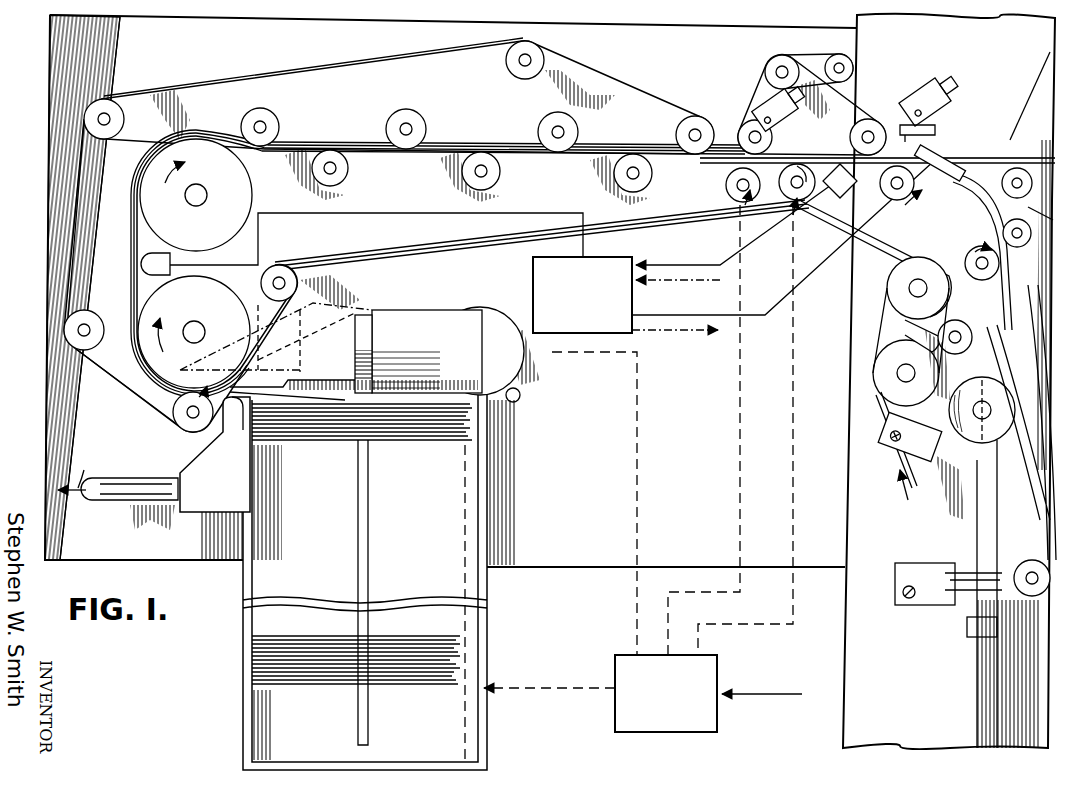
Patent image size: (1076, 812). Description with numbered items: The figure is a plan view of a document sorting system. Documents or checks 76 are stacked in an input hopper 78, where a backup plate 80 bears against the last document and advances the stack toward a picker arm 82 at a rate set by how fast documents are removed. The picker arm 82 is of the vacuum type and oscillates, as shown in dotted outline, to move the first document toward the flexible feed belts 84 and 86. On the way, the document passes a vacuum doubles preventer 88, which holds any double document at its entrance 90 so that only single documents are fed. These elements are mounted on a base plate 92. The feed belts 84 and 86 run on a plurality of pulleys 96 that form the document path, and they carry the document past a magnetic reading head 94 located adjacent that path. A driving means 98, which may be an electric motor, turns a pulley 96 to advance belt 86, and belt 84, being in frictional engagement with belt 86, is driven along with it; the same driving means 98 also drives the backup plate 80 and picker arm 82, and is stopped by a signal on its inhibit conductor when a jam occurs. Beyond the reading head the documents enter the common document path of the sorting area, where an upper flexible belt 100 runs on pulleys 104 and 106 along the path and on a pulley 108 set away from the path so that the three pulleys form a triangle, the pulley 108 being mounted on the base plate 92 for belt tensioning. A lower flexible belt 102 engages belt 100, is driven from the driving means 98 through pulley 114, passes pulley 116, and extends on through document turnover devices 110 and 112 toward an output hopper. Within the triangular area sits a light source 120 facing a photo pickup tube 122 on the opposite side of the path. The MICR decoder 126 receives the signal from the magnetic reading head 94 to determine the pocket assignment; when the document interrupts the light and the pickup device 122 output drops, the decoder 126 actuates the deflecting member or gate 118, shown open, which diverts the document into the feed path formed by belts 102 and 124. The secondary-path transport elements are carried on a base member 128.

The documents or checks 76 is at (133, 278).
The input hopper 78 is at (265, 578).
The backup plate 80 is at (372, 690).
The picker arm 82 is at (400, 324).
The feed belt 84 is at (345, 67).
The feed belt 86 is at (380, 155).
The vacuum doubles preventer 88 is at (205, 455).
The entrance 90 is at (240, 410).
The base plate 92 is at (57, 60).
The magnetic reading head 94 is at (150, 262).
The pulleys 96 is at (104, 139).
The driving means 98 is at (662, 732).
The upper flexible belt 100 is at (852, 100).
The lower flexible belt 102 is at (843, 230).
The pulley 104 is at (745, 128).
The pulley 106 is at (852, 134).
The pulley 108 is at (782, 56).
The document turnover device 110 is at (988, 370).
The document turnover device 112 is at (1030, 455).
The pulley 114 is at (802, 205).
The pulley 116 is at (895, 200).
The deflecting member or gate 118 is at (938, 192).
The light source 120 is at (766, 100).
The photo pickup tube 122 is at (850, 196).
The belt 124 is at (1004, 256).
The decoder 126 is at (533, 276).
The base member 128 is at (847, 722).